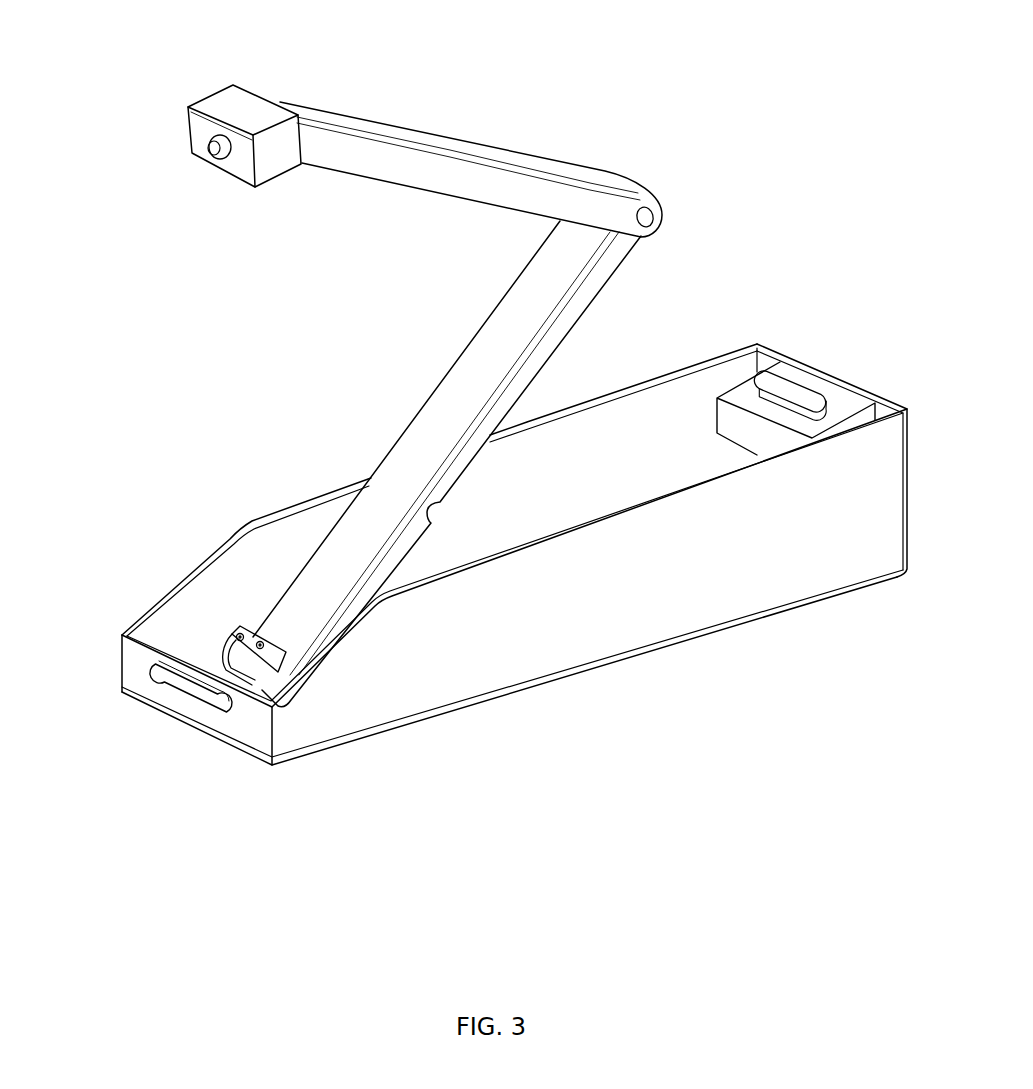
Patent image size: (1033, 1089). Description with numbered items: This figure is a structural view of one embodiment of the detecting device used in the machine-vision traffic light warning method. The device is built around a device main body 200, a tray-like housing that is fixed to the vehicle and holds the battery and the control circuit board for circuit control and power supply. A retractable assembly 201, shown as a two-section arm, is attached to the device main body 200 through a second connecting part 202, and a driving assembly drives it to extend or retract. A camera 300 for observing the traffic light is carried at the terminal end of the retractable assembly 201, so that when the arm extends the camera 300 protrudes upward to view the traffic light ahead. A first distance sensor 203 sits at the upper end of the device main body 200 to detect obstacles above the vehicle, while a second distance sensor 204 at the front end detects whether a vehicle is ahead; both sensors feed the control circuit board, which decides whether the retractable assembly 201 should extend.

The device main body 200 is at (600, 647).
The retractable assembly 201 is at (530, 217).
The second connecting part 202 is at (228, 655).
The first distance sensor 203 is at (793, 390).
The second distance sensor 204 is at (183, 683).
The camera 300 is at (193, 133).